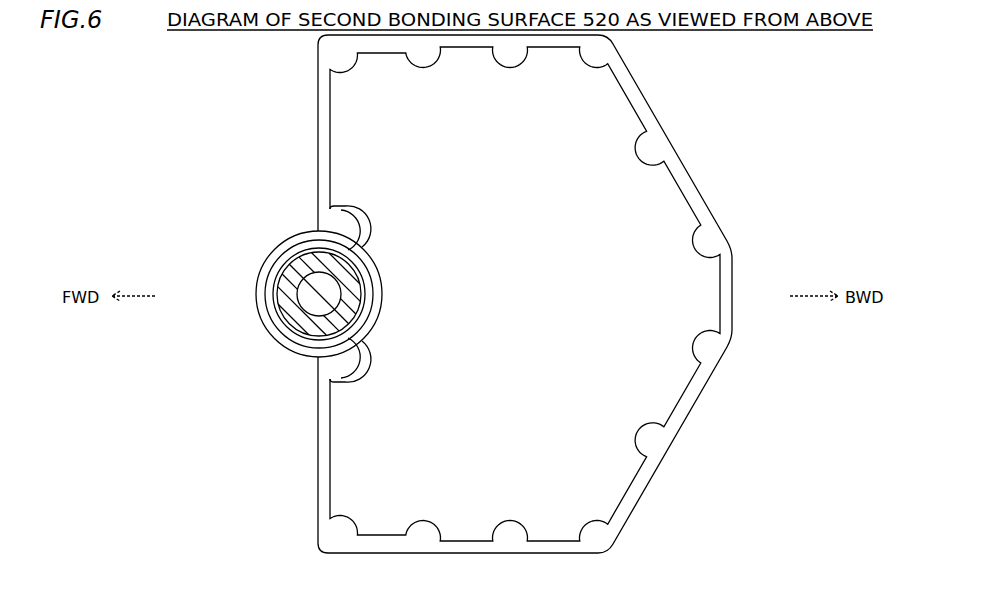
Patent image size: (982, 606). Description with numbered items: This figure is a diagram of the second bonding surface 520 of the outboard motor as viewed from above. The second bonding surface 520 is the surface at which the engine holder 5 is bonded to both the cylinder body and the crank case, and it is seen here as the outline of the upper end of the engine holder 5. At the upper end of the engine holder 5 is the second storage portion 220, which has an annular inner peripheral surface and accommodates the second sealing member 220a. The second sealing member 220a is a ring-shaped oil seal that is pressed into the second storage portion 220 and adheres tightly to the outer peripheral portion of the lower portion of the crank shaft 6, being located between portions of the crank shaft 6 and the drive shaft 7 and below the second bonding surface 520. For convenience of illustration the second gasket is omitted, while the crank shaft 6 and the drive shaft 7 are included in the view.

The engine holder 5 is at (699, 124).
The second bonding surface 520 is at (714, 352).
The second storage portion 220 is at (280, 272).
The second sealing member 220a is at (297, 342).
The crank shaft 6 is at (282, 305).
The drive shaft 7 is at (288, 318).